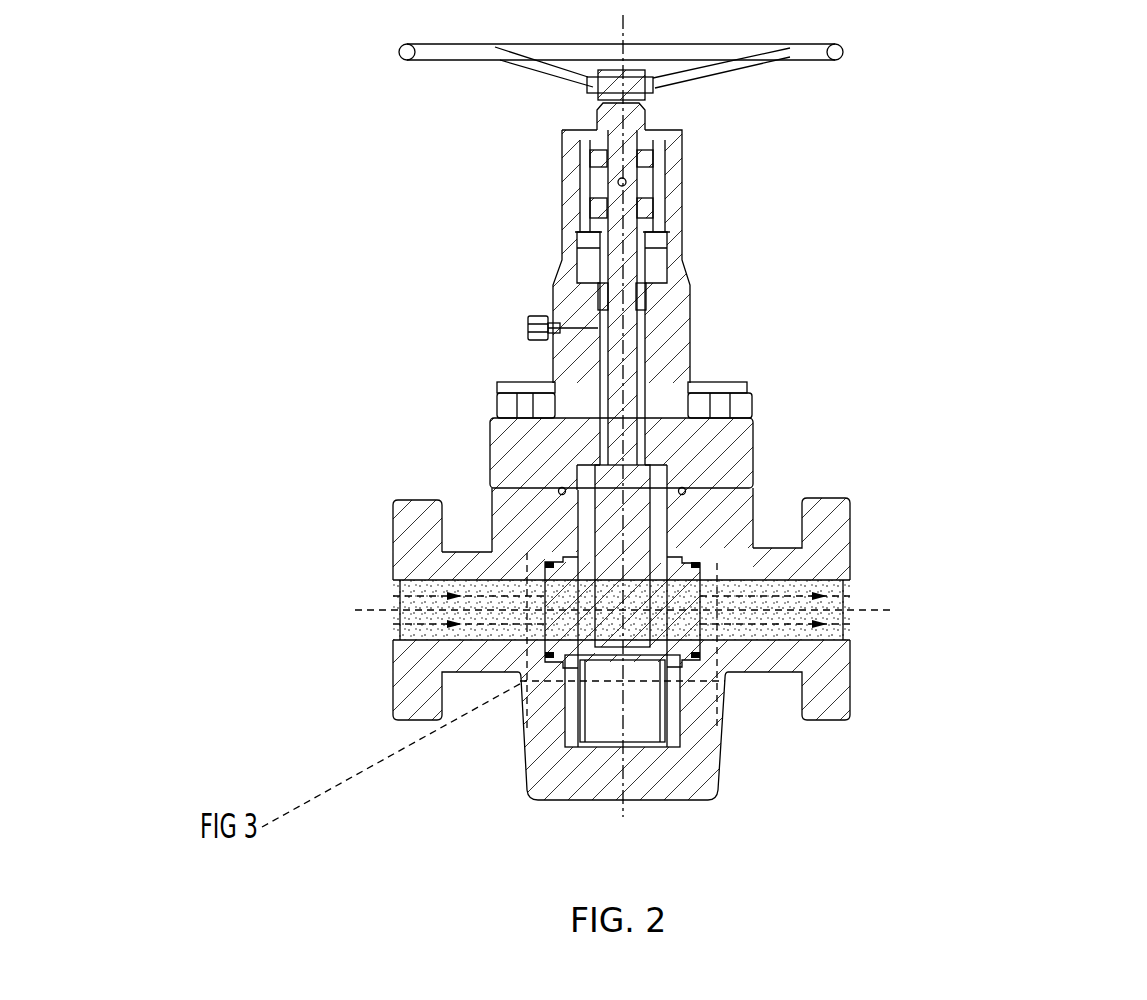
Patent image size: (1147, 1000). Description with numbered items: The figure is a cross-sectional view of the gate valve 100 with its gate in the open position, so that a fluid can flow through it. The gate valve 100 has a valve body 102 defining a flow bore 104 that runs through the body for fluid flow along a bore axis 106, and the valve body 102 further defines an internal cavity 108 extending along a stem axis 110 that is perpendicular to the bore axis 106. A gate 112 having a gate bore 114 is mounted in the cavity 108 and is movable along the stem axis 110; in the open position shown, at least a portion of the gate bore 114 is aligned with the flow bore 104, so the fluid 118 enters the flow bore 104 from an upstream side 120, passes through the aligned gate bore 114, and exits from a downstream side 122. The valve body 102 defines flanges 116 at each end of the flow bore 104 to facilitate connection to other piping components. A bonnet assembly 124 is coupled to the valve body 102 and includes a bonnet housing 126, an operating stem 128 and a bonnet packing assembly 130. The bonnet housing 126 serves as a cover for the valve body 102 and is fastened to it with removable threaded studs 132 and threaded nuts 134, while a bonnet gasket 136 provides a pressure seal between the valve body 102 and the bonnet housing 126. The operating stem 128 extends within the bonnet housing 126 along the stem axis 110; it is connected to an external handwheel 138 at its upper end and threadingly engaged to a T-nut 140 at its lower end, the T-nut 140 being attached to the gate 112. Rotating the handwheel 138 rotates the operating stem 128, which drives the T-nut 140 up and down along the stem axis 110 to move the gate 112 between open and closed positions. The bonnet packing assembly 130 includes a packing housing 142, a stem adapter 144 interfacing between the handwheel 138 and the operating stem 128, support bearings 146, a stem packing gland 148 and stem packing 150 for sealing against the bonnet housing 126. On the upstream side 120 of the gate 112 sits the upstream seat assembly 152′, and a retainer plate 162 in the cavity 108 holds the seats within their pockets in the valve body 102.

The gate valve 100 is at (960, 206).
The valve body 102 is at (690, 780).
The flow bore 104 is at (835, 632).
The bore axis 106 is at (892, 612).
The internal cavity 108 is at (663, 527).
The stem axis 110 is at (623, 817).
The gate 112 is at (686, 491).
The gate bore 114 is at (662, 663).
The flanges 116 is at (420, 700).
The fluid 118 is at (393, 592).
The upstream side 120 is at (393, 665).
The downstream side 122 is at (852, 590).
The bonnet assembly 124 is at (512, 340).
The bonnet housing 126 is at (720, 448).
The operating stem 128 is at (598, 280).
The bonnet packing assembly 130 is at (518, 192).
The threaded studs 132 is at (737, 390).
The threaded nuts 134 is at (750, 407).
The bonnet gasket 136 is at (559, 488).
The handwheel 138 is at (838, 62).
The T-nut 140 is at (645, 392).
The packing housing 142 is at (687, 162).
The stem adapter 144 is at (680, 180).
The support bearings 146 is at (680, 207).
The stem packing gland 148 is at (680, 253).
The stem packing 150 is at (640, 297).
The upstream seat assembly 152′ is at (541, 552).
The retainer plate 162 is at (567, 720).